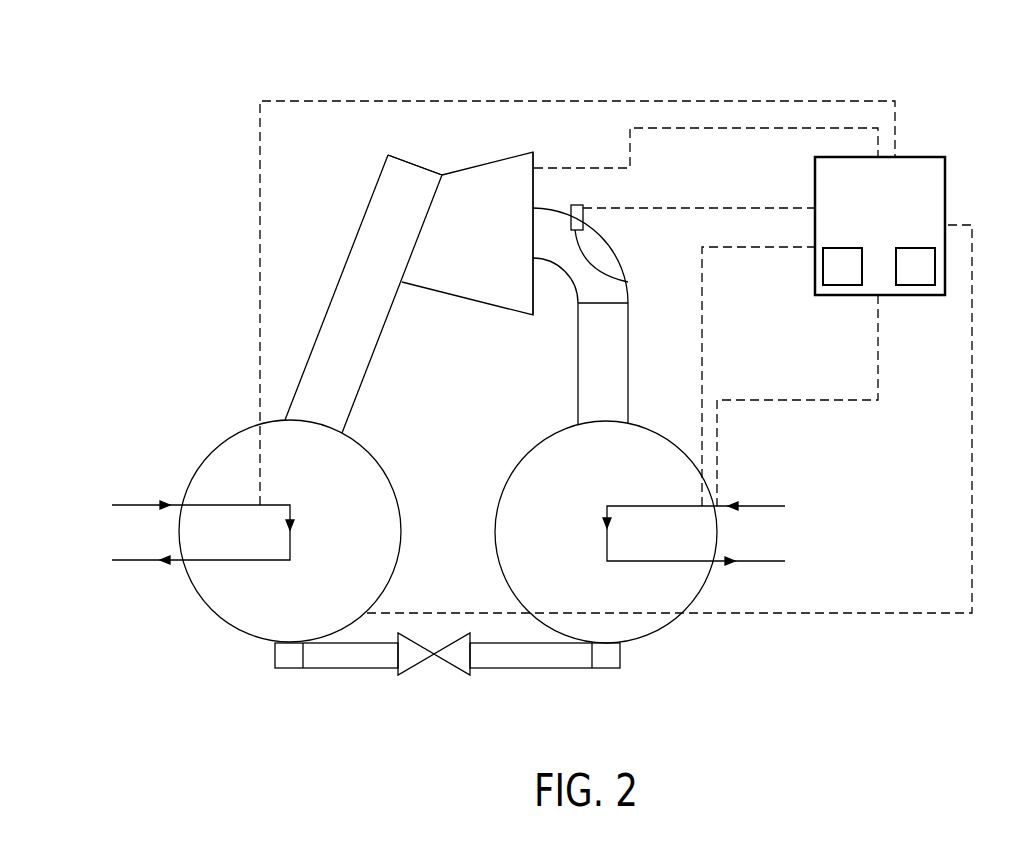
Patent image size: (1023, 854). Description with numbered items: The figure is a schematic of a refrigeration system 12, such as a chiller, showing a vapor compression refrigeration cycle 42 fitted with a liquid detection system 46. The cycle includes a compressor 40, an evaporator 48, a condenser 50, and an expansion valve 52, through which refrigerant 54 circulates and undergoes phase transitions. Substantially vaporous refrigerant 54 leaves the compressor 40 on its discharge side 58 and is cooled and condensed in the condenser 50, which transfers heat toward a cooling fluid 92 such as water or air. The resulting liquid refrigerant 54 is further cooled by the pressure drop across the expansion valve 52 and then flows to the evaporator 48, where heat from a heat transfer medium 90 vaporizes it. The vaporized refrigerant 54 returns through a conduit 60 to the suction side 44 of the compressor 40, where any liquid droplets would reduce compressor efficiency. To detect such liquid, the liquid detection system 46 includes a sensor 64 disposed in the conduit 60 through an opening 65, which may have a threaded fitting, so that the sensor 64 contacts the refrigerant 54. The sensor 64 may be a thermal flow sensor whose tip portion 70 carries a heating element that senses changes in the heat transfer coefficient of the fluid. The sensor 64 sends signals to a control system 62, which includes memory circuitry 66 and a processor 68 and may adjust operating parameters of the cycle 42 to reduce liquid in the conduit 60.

The refrigeration system 12 is at (880, 80).
The compressor 40 is at (468, 278).
The vapor compression refrigeration cycle 42 is at (477, 395).
The suction side 44 is at (553, 185).
The liquid detection system 46 is at (683, 193).
The evaporator 48 is at (663, 432).
The condenser 50 is at (381, 463).
The expansion valve 52 is at (458, 672).
The refrigerant 54 is at (357, 293).
The discharge side 58 is at (352, 213).
The conduit 60 is at (549, 200).
The control system 62 is at (903, 234).
The sensor 64 is at (583, 212).
The opening 65 is at (568, 205).
The memory circuitry 66 is at (838, 286).
The processor 68 is at (917, 286).
The tip portion 70 is at (628, 282).
The heat transfer medium 90 is at (758, 505).
The cooling fluid 92 is at (135, 504).